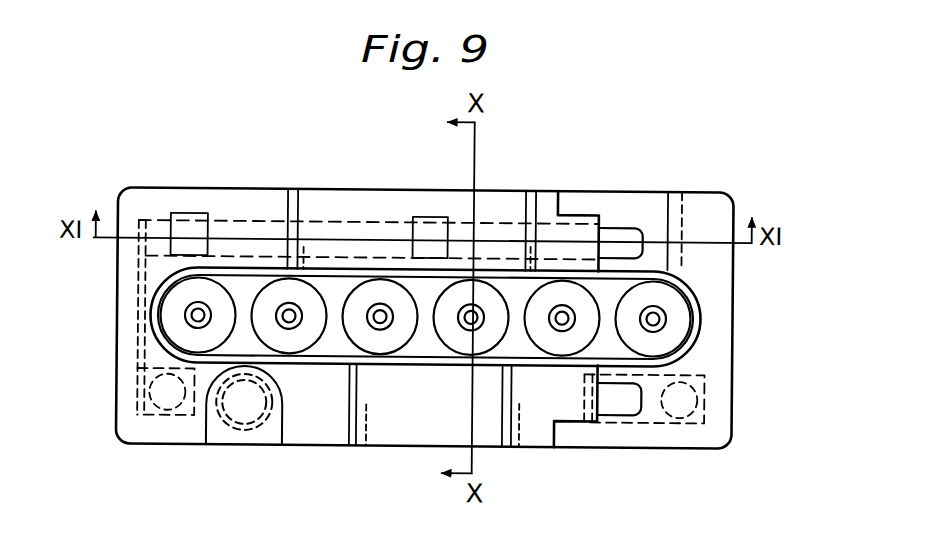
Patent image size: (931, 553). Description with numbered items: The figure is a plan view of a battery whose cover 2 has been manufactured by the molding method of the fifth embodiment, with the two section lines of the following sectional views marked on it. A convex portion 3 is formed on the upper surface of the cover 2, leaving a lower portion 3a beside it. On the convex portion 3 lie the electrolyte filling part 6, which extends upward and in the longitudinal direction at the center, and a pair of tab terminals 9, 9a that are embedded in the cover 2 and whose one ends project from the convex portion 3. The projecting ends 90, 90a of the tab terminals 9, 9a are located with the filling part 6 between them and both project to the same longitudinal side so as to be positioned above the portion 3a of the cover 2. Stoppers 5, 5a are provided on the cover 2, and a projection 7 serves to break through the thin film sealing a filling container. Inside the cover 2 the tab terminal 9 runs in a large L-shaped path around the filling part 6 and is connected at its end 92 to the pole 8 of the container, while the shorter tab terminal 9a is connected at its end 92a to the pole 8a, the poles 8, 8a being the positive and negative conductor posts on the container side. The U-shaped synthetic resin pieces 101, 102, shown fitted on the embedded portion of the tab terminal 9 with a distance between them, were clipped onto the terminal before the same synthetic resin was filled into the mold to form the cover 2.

The cover 2 is at (736, 278).
The convex portion 3 is at (504, 206).
The portion left on the upper surface of the cover 3a is at (710, 215).
The stopper 5 is at (576, 210).
The stopper 5a is at (581, 428).
The filling part 6 is at (156, 293).
The projection 7 is at (186, 318).
The pole 8 is at (150, 418).
The pole 8a is at (673, 426).
The tab terminal 9 is at (364, 221).
The tab terminal 9a is at (646, 424).
The projecting end 90 is at (627, 237).
The projecting end 90a is at (622, 407).
The end 92 is at (195, 418).
The end 92a is at (704, 422).
The synthetic resin piece 101 is at (188, 222).
The synthetic resin piece 102 is at (430, 217).